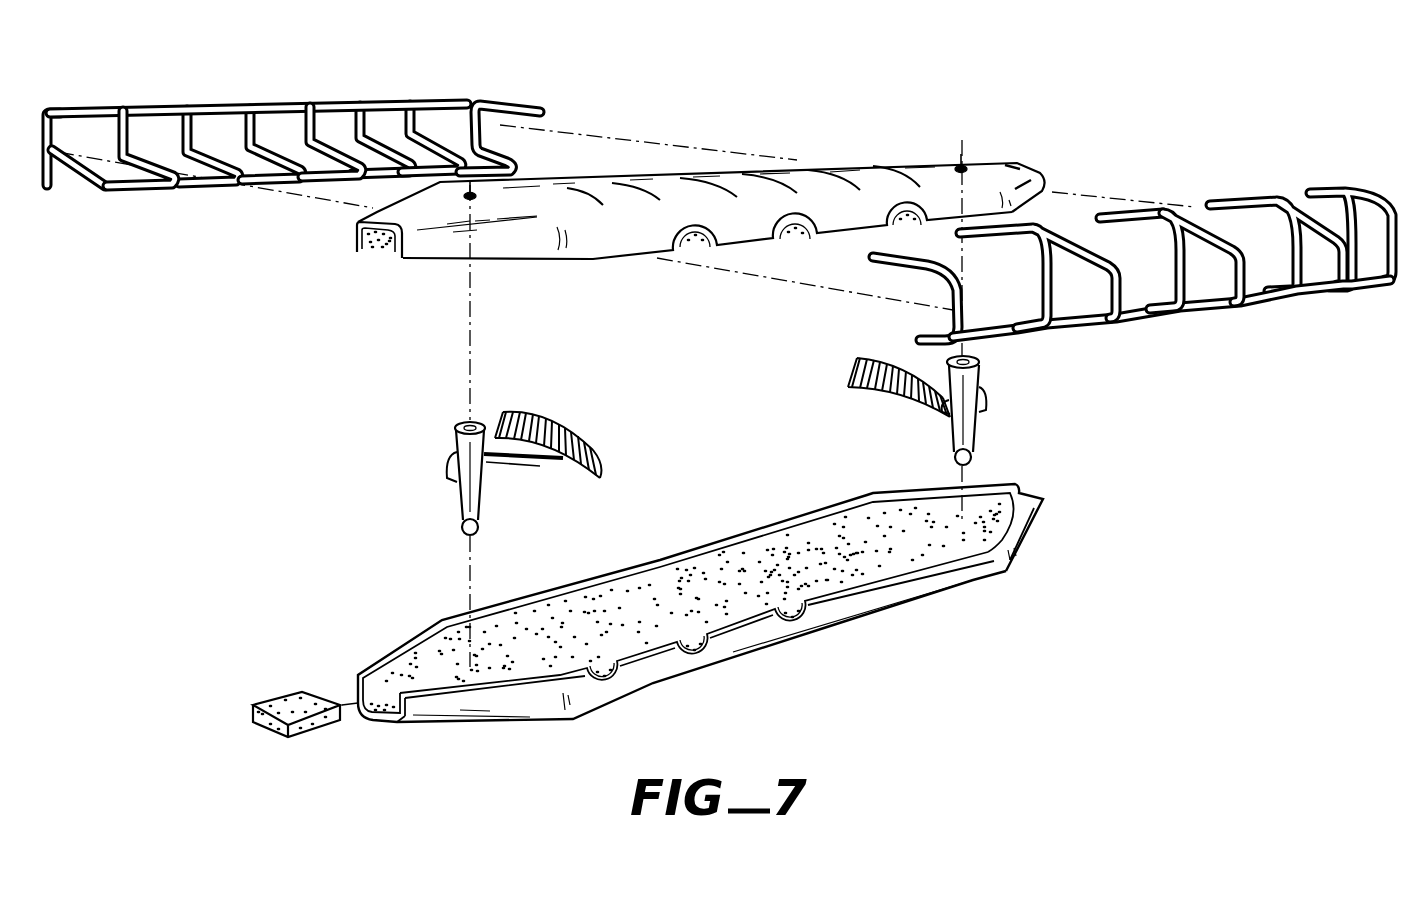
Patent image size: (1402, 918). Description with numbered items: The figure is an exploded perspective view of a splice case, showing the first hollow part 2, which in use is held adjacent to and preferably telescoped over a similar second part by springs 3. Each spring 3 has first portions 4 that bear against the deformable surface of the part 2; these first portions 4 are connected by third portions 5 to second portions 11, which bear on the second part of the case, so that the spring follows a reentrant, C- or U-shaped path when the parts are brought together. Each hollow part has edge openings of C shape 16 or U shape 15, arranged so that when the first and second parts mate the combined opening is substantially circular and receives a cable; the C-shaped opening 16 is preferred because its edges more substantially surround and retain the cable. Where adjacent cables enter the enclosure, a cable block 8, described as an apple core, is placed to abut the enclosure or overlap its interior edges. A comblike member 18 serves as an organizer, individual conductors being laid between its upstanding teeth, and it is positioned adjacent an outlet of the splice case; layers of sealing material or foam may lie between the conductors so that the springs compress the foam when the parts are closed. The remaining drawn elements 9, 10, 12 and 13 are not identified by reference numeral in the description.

The first hollow part 2 is at (592, 262).
The spring 3 is at (96, 190).
The first portion of spring 4 is at (173, 112).
The third portion of spring 5 is at (300, 128).
The cable block 8 is at (560, 462).
The comb bracket 9 is at (597, 447).
The foam insert 10 is at (384, 250).
The second portion of spring 11 is at (148, 185).
The tray base member 12 is at (834, 632).
The slits 13 is at (743, 175).
The U-shaped opening 15 is at (693, 656).
The C-shaped opening 16 is at (793, 237).
The comblike member 18 is at (305, 690).